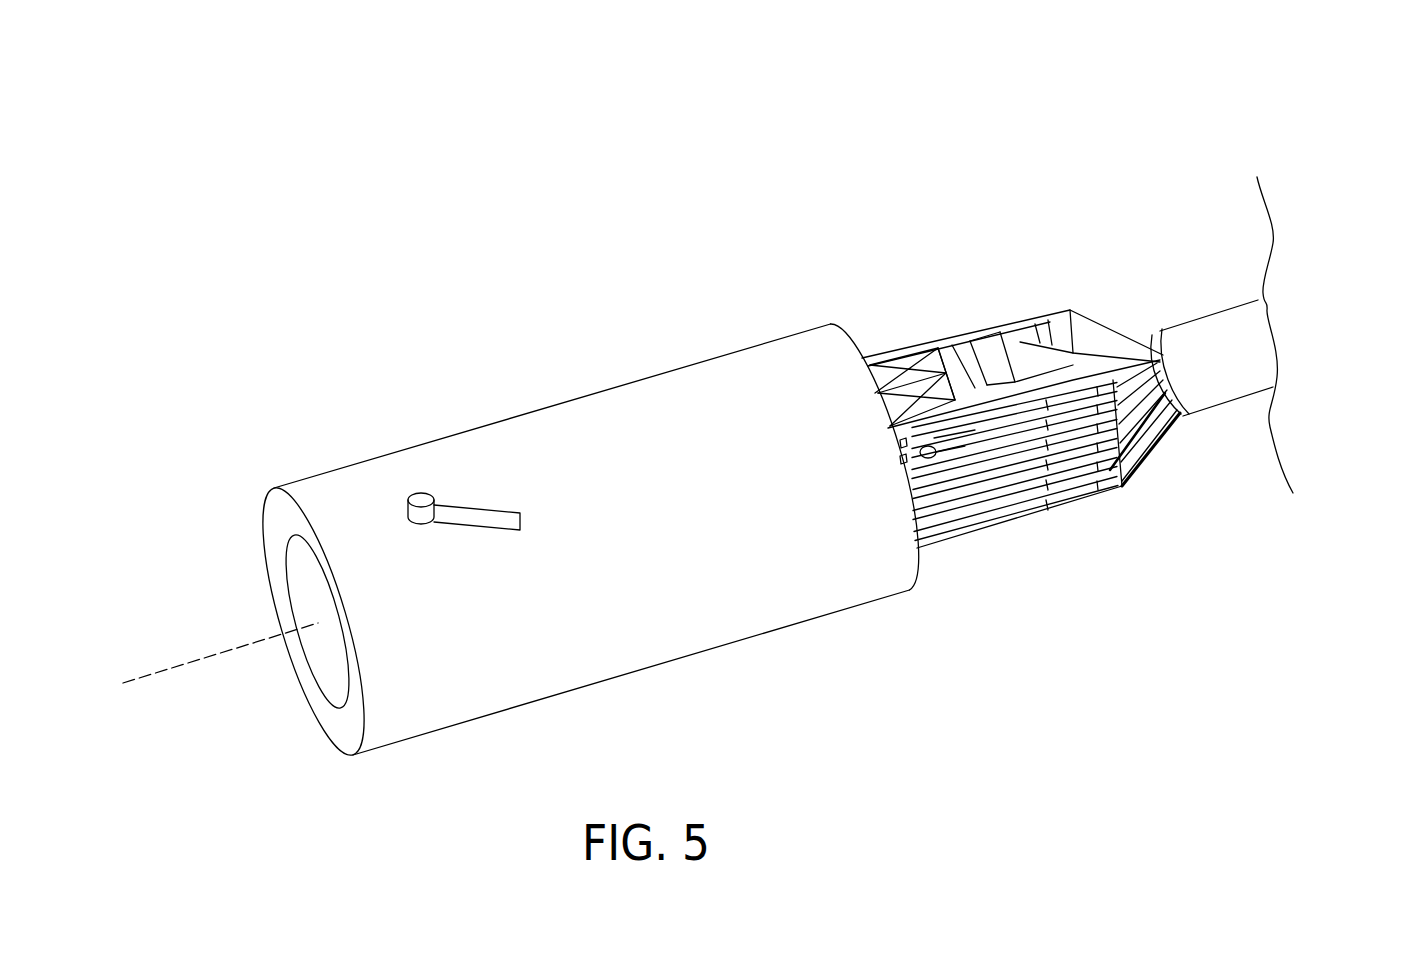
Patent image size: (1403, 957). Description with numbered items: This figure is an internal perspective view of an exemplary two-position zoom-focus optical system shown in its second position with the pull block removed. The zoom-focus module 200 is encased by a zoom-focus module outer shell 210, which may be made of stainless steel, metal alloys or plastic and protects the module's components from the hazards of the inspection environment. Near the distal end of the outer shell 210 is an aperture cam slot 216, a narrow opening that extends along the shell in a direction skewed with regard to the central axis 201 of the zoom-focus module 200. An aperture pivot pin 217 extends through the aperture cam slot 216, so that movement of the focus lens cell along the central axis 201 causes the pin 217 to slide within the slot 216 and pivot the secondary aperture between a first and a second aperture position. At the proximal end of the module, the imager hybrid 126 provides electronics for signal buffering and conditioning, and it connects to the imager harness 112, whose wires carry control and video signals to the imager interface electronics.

The zoom-focus module 200 is at (715, 120).
The central axis 201 is at (153, 675).
The zoom-focus module outer shell 210 is at (623, 383).
The aperture cam slot 216 is at (492, 517).
The aperture pivot pin 217 is at (413, 493).
The imager hybrid 126 is at (945, 337).
The imager harness 112 is at (1237, 303).